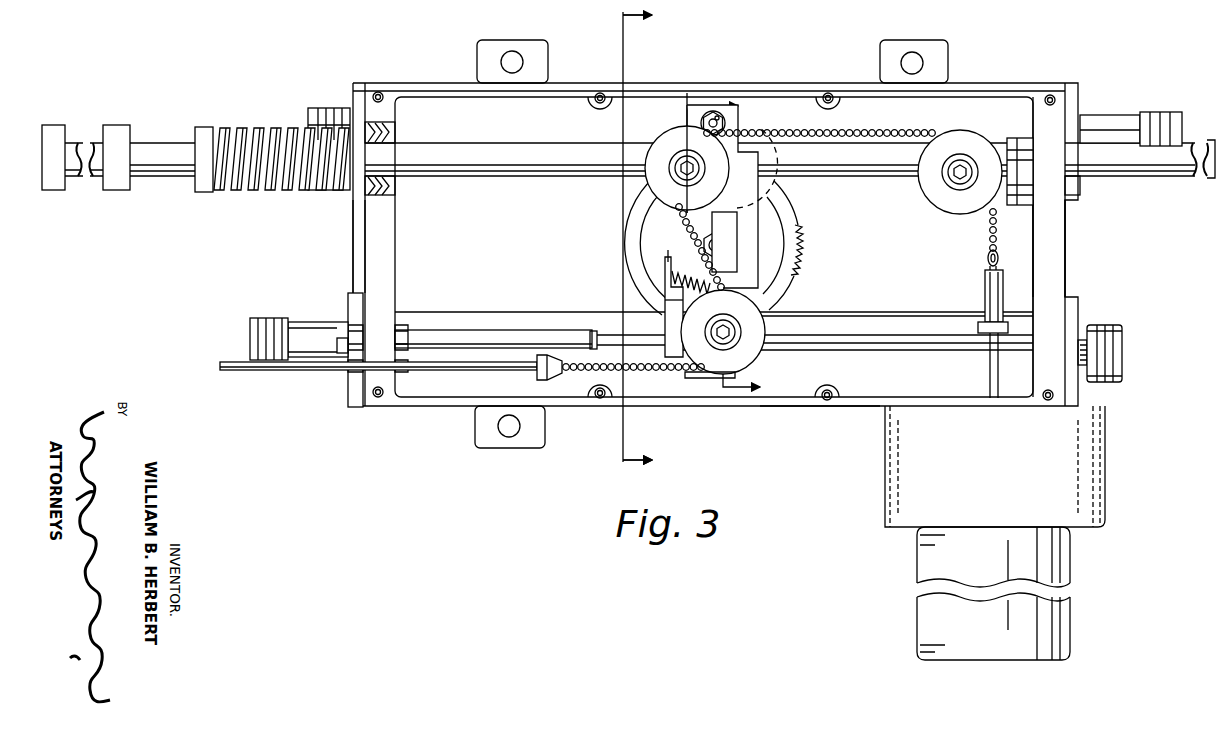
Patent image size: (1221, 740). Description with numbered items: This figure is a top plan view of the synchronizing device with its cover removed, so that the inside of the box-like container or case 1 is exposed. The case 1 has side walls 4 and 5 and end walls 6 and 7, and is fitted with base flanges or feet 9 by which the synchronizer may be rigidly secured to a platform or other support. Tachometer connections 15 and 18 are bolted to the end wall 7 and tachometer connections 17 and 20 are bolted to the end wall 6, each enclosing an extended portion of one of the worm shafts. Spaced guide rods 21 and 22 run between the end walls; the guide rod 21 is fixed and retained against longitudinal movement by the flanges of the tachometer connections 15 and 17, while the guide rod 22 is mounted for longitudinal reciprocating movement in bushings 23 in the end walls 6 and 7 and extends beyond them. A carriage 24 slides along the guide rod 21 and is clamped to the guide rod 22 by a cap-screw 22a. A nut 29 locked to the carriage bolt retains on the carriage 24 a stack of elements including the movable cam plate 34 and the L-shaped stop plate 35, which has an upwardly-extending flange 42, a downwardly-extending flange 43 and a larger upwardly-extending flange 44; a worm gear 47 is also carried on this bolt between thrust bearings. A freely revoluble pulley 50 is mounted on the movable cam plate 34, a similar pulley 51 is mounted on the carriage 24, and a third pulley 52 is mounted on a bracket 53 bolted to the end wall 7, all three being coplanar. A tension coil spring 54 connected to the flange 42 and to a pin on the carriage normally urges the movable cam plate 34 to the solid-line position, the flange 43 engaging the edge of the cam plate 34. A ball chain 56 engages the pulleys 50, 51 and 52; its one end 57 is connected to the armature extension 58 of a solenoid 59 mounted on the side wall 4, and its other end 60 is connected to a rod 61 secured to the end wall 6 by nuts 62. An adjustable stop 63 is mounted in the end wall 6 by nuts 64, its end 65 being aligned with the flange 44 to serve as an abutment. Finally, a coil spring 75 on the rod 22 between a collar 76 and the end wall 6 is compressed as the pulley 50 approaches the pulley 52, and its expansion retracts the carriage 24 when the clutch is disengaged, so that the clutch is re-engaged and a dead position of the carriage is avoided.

The container or case 1 is at (818, 408).
The side wall 4 is at (727, 410).
The side wall 5 is at (690, 88).
The end wall 6 is at (363, 245).
The end wall 7 is at (1090, 245).
The base flanges or feet 9 is at (475, 63).
The tachometer connection 15 is at (1105, 327).
The tachometer connection 17 is at (277, 378).
The tachometer connection 18 is at (1118, 115).
The tachometer connection 20 is at (320, 108).
The guide rod 21 is at (485, 312).
The guide rod 22 is at (168, 178).
The cap-screw 22a is at (717, 116).
The bushings 23 is at (396, 132).
The carriage 24 is at (737, 123).
The nut 29 is at (722, 237).
The movable cam plate 34 is at (742, 197).
The stop plate 35 is at (734, 268).
The upwardly-extending flange 42 is at (666, 272).
The downwardly-extending flange 43 is at (664, 300).
The upwardly-extending flange 44 is at (666, 330).
The worm gear 47 is at (801, 250).
The pulley 50 is at (668, 138).
The pulley 51 is at (752, 353).
The pulley 52 is at (950, 140).
The bracket 53 is at (1000, 142).
The tension coil spring 54 is at (673, 258).
The ball chain 56 is at (862, 132).
The chain end 57 is at (998, 260).
The armature extension 58 is at (988, 368).
The solenoid 59 is at (1070, 565).
The chain end 60 is at (552, 373).
The rod 61 is at (470, 371).
The nuts 62 is at (353, 384).
The adjustable stop 63 is at (438, 336).
The nuts 64 is at (355, 324).
The stop end 65 is at (593, 335).
The coil spring 75 is at (257, 191).
The collar 76 is at (206, 128).